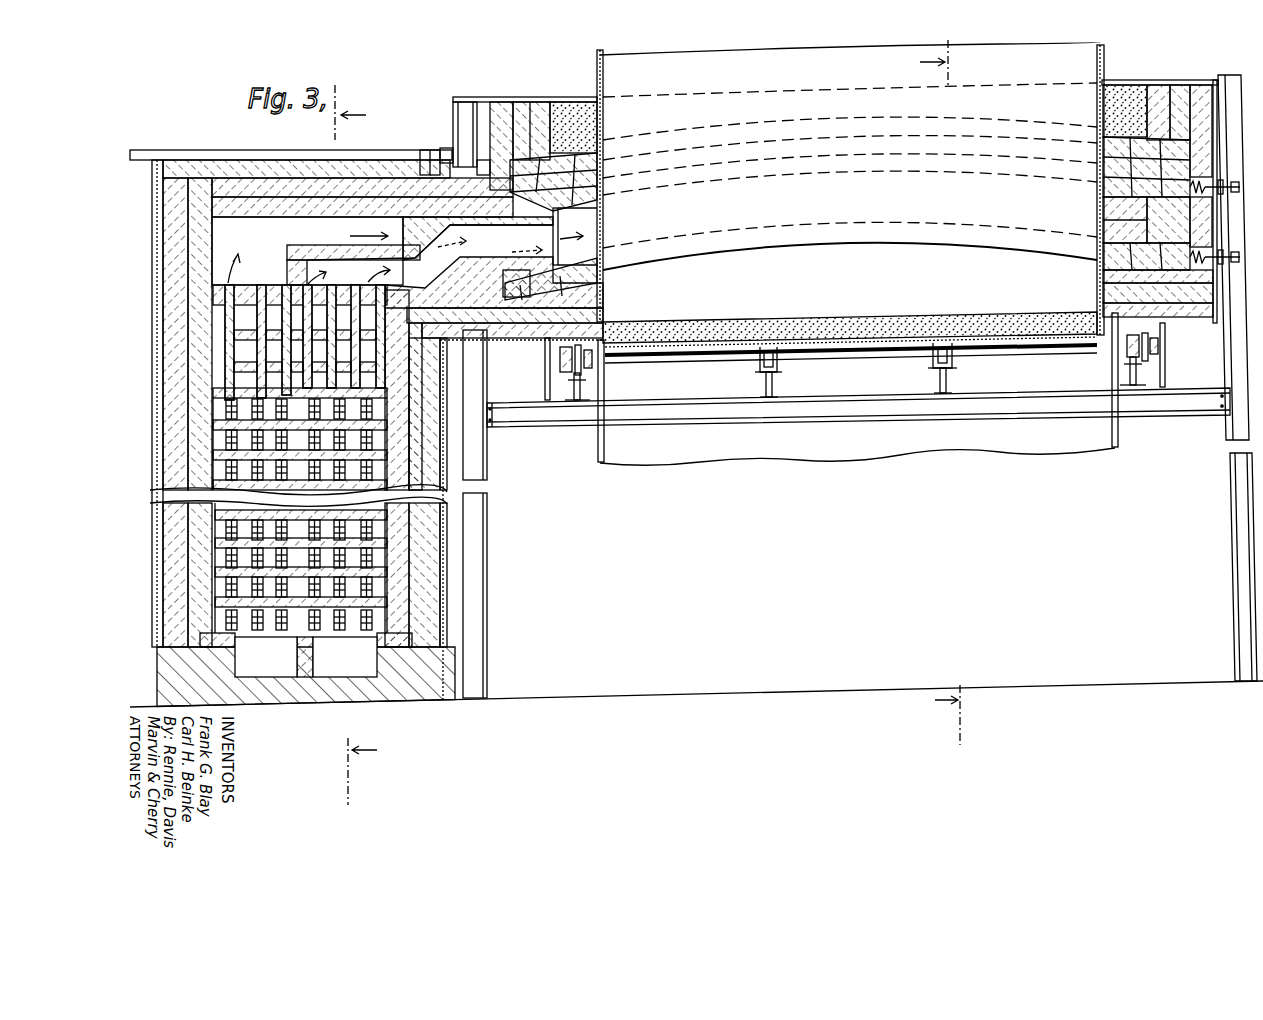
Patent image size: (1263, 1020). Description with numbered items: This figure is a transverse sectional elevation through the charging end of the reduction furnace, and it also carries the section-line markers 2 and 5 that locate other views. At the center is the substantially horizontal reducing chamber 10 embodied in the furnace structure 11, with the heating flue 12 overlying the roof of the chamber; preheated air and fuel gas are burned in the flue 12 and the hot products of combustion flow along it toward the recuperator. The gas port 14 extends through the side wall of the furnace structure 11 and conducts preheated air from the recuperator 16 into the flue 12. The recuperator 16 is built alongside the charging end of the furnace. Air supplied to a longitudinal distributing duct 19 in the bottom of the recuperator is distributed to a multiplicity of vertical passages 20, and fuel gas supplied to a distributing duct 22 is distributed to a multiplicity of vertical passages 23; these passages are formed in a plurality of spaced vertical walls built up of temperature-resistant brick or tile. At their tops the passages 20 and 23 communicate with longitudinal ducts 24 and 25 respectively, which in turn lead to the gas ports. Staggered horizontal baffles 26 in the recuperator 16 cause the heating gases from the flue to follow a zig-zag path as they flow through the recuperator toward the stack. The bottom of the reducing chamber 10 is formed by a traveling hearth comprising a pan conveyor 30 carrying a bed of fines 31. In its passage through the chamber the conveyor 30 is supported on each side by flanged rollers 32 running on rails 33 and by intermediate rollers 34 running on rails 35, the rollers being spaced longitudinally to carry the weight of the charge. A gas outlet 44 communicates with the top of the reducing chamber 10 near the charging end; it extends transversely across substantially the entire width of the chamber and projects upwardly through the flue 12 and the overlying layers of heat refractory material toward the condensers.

The reducing chamber 10 is at (850, 265).
The furnace structure 11 is at (1170, 85).
The heating flue 12 is at (850, 165).
The gas port 14 is at (508, 198).
The recuperator 16 is at (172, 245).
The distributing duct 19 is at (345, 657).
The vertical passages 20 is at (345, 551).
The distributing duct 22 is at (266, 657).
The vertical passages 23 is at (288, 471).
The longitudinal duct 24 is at (445, 262).
The longitudinal duct 25 is at (307, 251).
The horizontal baffles 26 is at (262, 410).
The pan conveyor 30 is at (895, 355).
The bed of fines 31 is at (693, 335).
The flanged rollers 32 is at (565, 357).
The rails 33 is at (578, 378).
The intermediate rollers 34 is at (765, 365).
The rails 35 is at (775, 380).
The gas outlet 44 is at (598, 72).
The section line 2- 2 is at (935, 392).
The section line 5- 5 is at (363, 445).